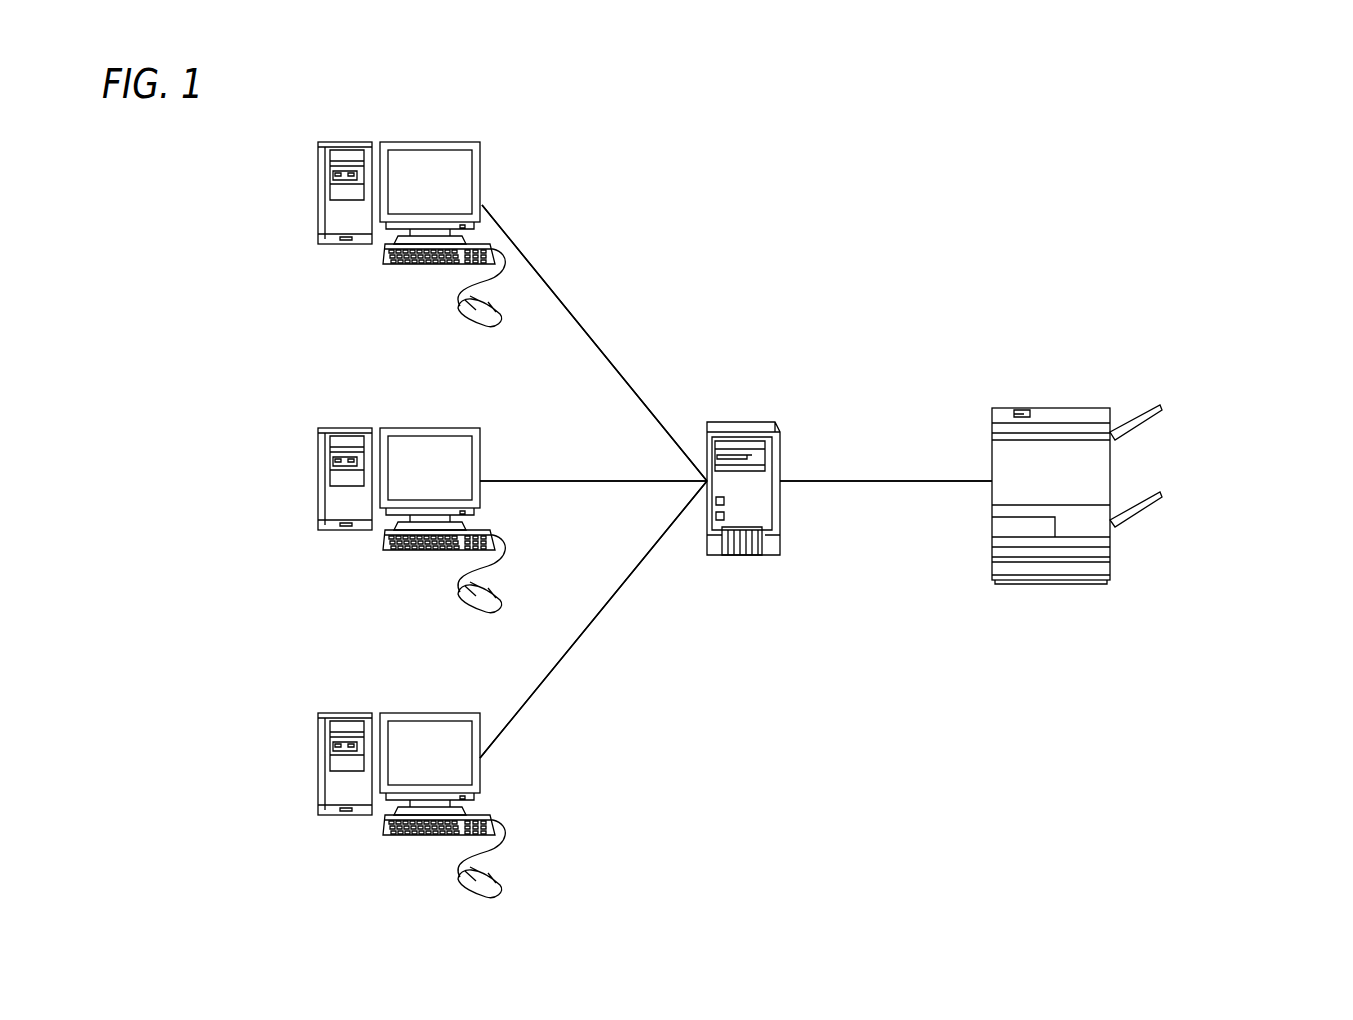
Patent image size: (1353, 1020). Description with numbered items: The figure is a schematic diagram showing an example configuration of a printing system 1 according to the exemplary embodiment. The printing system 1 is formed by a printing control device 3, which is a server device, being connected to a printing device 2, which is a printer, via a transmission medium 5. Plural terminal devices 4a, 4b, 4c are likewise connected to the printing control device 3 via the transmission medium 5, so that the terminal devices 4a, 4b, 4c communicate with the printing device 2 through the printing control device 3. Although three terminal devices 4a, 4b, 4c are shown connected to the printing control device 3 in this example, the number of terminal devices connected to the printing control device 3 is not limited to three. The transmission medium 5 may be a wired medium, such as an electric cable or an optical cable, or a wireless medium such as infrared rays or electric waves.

The printing system 1 is at (976, 128).
The printing device 2 is at (1062, 408).
The printing control device 3 is at (745, 421).
The terminal device 4a is at (388, 137).
The terminal device 4b is at (388, 427).
The terminal device 4c is at (388, 712).
The transmission medium 5 is at (588, 333).